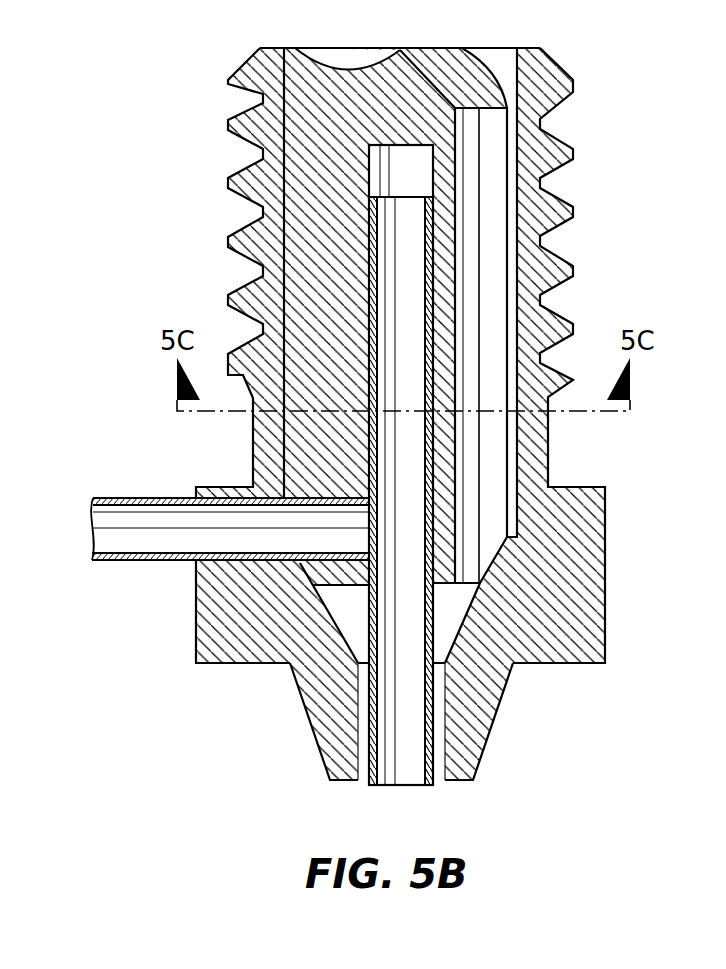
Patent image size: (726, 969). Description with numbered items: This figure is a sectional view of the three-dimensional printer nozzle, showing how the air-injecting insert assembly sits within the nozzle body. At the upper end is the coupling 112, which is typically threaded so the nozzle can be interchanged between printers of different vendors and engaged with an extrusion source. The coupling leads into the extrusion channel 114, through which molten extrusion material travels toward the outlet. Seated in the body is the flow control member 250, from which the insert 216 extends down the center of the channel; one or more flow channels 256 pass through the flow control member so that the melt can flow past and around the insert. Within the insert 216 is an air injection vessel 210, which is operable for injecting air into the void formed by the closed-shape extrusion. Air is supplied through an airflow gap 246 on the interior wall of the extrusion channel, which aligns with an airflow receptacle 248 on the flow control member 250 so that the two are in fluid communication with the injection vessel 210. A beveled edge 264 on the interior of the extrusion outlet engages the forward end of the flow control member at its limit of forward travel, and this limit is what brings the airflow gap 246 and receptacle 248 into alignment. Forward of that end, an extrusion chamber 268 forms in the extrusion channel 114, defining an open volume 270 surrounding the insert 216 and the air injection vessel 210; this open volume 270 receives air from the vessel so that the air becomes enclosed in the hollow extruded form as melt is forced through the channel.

The coupling 112 is at (567, 145).
The extrusion channel 114 is at (443, 70).
The flow control member 250 is at (327, 118).
The flow channels 256 is at (490, 237).
The air injection vessel 210 is at (398, 490).
The airflow receptacle 248 is at (329, 517).
The airflow gap 246 is at (242, 498).
The open volume 270 is at (458, 603).
The insert 216 is at (432, 627).
The beveled edge 264 is at (320, 600).
The extrusion chamber 268 is at (357, 625).